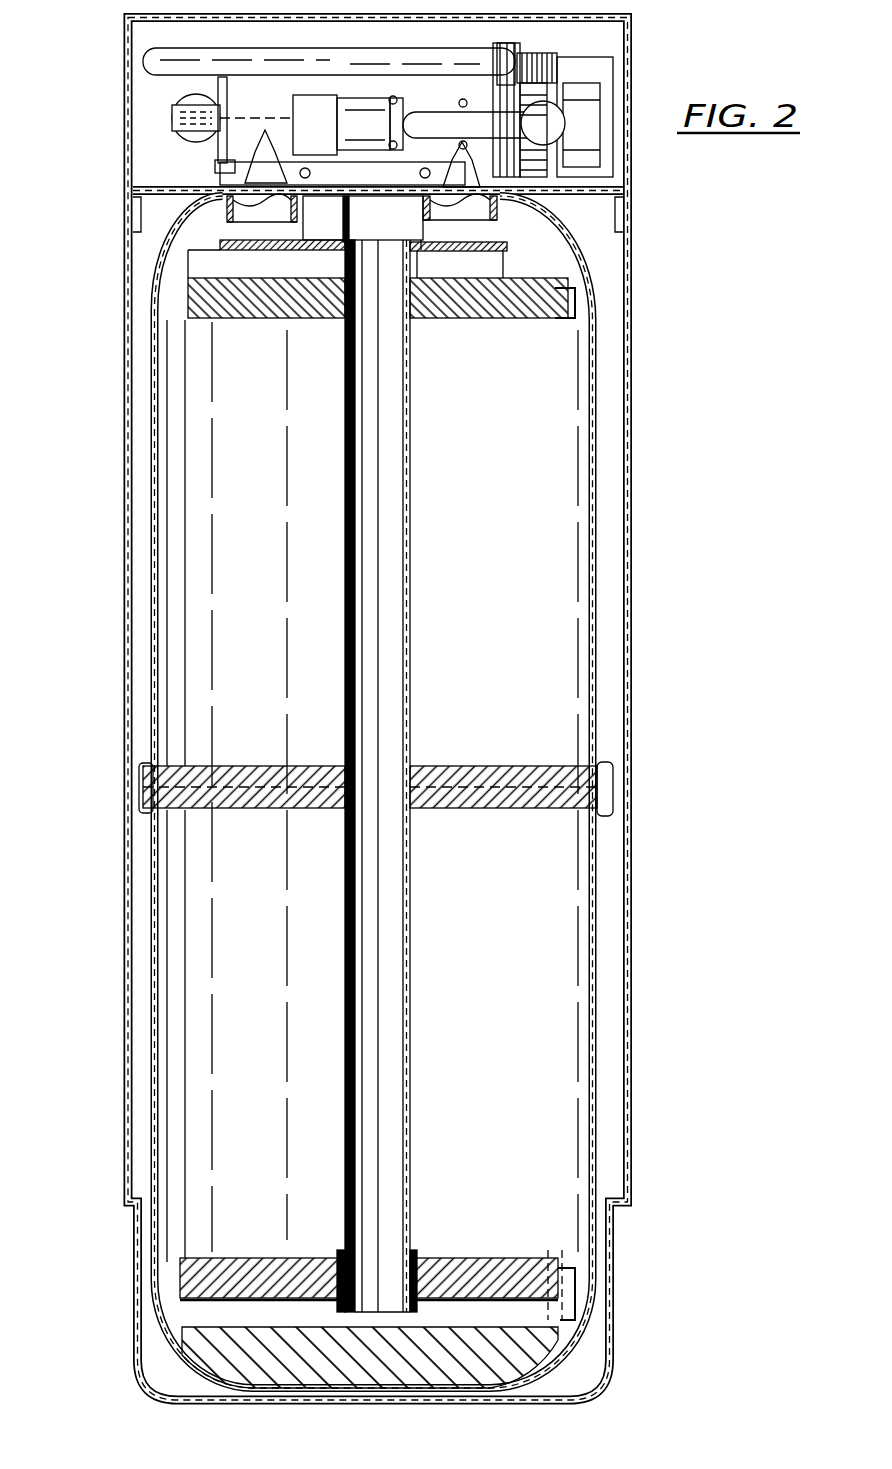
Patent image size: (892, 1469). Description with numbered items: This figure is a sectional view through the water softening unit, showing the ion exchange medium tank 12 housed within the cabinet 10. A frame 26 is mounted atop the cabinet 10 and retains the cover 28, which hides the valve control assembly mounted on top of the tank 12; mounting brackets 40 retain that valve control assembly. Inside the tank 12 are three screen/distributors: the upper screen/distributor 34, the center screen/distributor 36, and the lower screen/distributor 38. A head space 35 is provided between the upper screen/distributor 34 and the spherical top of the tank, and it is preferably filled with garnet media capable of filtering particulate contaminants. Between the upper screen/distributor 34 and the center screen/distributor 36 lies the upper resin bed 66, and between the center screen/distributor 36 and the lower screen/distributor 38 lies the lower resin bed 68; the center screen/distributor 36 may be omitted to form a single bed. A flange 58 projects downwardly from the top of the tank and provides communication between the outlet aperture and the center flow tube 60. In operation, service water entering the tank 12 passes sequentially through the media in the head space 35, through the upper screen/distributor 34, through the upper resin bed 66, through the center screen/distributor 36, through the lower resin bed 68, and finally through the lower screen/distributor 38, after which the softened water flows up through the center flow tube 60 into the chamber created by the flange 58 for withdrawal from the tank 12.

The cabinet 10 is at (633, 706).
The ion exchange medium tank 12 is at (602, 550).
The frame 26 is at (637, 212).
The cover 28 is at (637, 44).
The upper screen/distributor 34 is at (552, 318).
The head space 35 is at (327, 276).
The center screen/distributor 36 is at (542, 808).
The lower screen/distributor 38 is at (553, 1260).
The mounting brackets 40 is at (373, 186).
The flange 58 is at (352, 207).
The center flow tube 60 is at (410, 500).
The upper resin bed 66 is at (510, 664).
The lower resin bed 68 is at (510, 996).